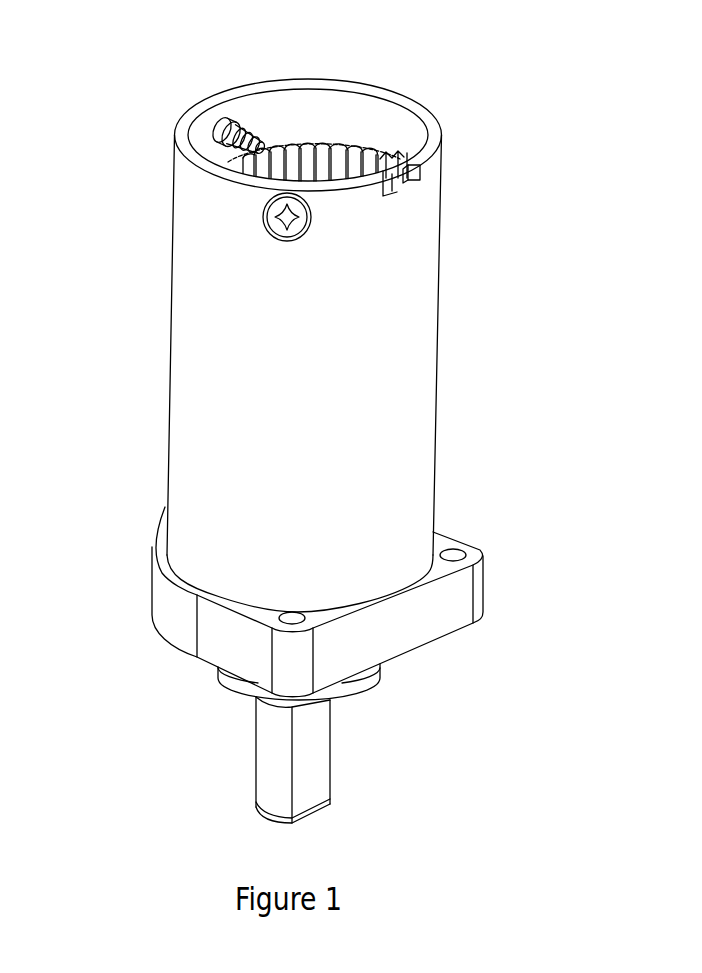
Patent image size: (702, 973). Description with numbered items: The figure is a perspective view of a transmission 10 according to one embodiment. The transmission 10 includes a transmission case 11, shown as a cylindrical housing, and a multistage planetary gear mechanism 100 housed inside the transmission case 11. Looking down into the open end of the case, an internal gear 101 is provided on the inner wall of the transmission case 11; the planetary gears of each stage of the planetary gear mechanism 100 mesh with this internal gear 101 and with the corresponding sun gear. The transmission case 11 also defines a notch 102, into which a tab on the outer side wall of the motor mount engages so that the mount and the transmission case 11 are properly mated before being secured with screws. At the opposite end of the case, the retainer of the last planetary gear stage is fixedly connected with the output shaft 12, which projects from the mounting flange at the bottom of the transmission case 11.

The transmission 10 is at (98, 51).
The transmission case 11 is at (435, 393).
The output shaft 12 is at (328, 762).
The multistage planetary gear mechanism 100 is at (347, 176).
The internal gear 101 is at (315, 146).
The notch 102 is at (418, 178).